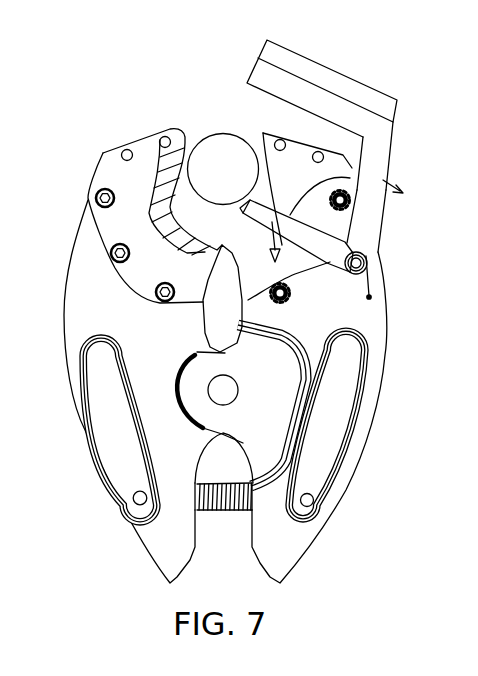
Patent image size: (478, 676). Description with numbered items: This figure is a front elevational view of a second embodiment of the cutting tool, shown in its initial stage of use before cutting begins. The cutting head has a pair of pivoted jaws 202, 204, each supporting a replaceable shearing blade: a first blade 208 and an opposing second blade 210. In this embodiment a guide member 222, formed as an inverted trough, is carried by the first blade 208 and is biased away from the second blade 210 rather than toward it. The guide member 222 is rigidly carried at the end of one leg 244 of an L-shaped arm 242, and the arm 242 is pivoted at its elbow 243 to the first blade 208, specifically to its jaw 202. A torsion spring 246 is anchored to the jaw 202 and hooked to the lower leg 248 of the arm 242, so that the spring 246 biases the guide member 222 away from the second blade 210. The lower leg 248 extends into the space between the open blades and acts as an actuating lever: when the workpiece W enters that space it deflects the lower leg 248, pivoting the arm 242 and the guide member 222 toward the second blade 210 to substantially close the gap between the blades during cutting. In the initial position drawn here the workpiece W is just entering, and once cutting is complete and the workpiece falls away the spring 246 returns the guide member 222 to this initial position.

The jaw 202 is at (375, 348).
The second housing half 204 is at (73, 328).
The first blade 208 is at (271, 140).
The second blade 210 is at (110, 171).
The guide member 222 is at (340, 85).
The L-shaped arm 242 is at (383, 130).
The elbow 243 is at (352, 277).
The leg 244 is at (377, 170).
The torsion spring 246 is at (373, 278).
The lower leg 248 is at (247, 210).
The workpiece W is at (213, 133).